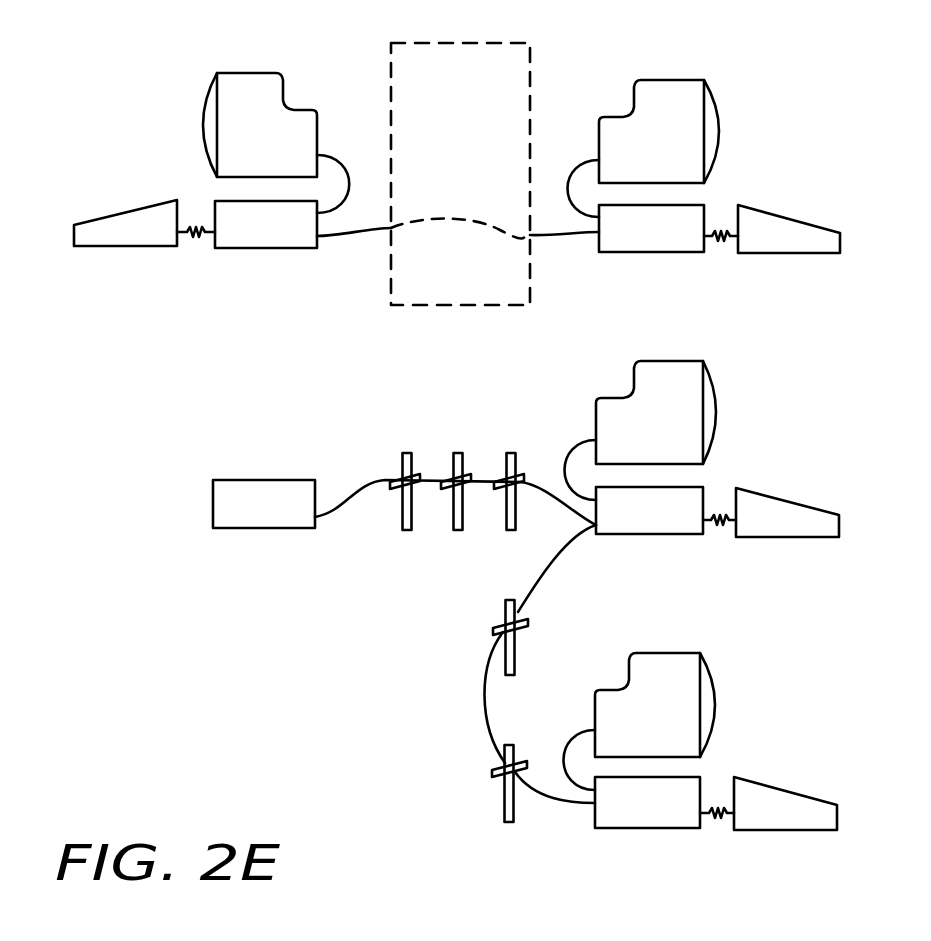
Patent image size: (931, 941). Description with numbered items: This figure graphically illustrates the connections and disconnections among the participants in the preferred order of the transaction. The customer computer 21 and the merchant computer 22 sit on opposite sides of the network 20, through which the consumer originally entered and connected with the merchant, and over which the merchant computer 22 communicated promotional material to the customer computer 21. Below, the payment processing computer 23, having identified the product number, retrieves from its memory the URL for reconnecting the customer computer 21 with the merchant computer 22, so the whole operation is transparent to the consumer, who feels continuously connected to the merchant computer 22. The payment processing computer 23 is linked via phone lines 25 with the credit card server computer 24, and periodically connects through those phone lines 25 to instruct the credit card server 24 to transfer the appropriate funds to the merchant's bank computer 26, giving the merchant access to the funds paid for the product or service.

The network 20 is at (390, 295).
The customer computer 21 is at (203, 110).
The merchant computer 22 is at (720, 118).
The payment processing computer 23 is at (213, 493).
The credit card server computer 24 is at (716, 400).
The phone lines 25 is at (458, 453).
The merchant's bank computer 26 is at (713, 678).